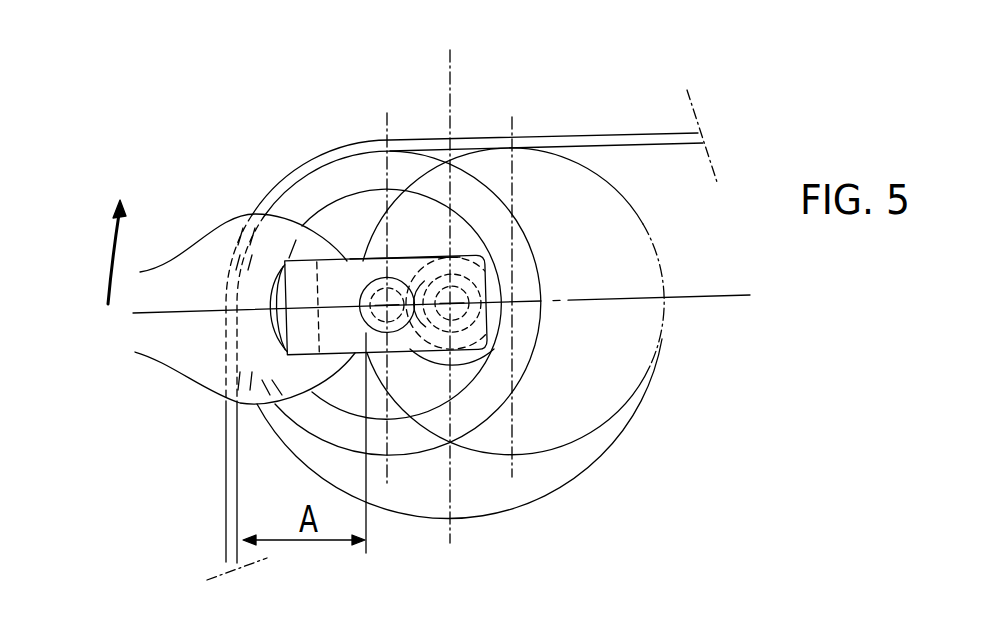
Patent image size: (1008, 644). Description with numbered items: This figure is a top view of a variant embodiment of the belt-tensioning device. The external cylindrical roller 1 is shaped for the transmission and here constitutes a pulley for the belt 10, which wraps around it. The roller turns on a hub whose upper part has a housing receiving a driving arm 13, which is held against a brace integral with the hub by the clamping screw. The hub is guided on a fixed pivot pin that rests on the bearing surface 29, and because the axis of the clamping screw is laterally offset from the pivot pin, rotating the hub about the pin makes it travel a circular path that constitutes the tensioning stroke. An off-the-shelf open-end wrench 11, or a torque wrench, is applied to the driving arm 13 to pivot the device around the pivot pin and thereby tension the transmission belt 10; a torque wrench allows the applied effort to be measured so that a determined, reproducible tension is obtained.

The external cylindrical roller 1 is at (470, 193).
The belt 10 is at (595, 138).
The open-end wrench 11 is at (192, 273).
The driving arm 13 is at (341, 290).
The bearing surface 29 is at (402, 258).